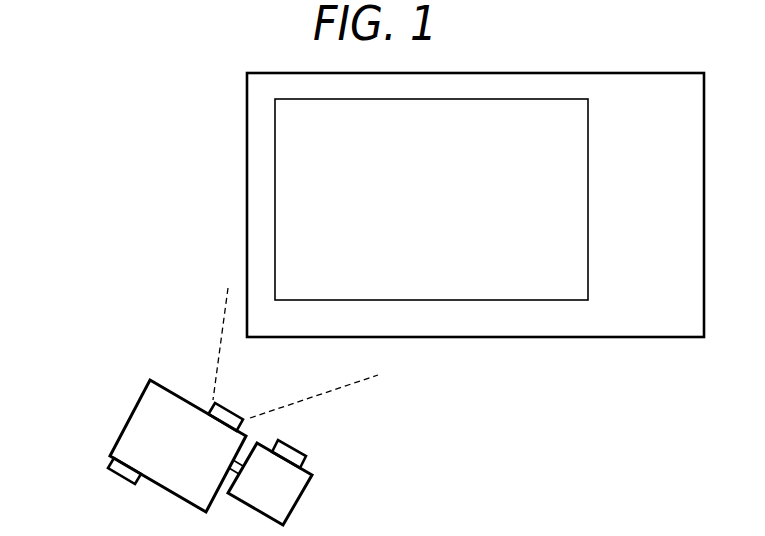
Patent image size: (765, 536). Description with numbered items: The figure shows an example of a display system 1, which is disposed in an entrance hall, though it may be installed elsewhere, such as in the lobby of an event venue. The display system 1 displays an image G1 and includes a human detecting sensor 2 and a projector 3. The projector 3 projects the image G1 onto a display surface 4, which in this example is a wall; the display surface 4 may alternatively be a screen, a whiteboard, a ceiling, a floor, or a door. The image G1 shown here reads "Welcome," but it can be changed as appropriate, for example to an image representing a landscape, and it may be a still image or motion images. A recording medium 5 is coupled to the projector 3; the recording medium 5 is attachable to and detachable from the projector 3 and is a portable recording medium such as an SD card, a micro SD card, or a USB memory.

The display system 1 is at (84, 292).
The human detecting sensor 2 is at (306, 489).
The projector 3 is at (140, 393).
The display surface 4 is at (618, 301).
The recording medium 5 is at (108, 478).
The image G1 is at (290, 220).